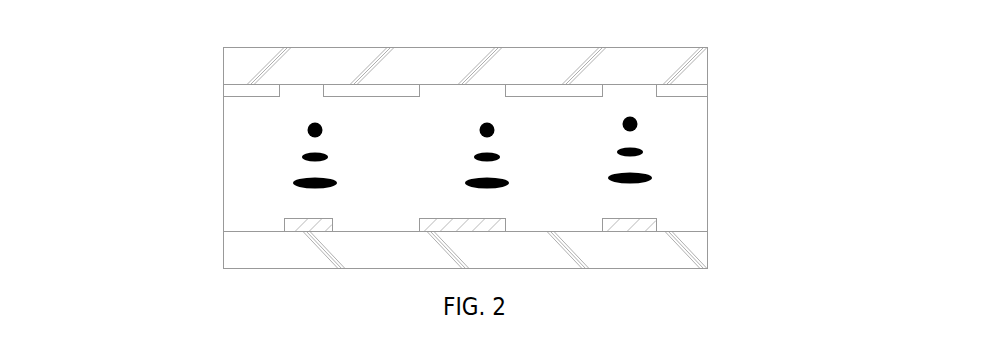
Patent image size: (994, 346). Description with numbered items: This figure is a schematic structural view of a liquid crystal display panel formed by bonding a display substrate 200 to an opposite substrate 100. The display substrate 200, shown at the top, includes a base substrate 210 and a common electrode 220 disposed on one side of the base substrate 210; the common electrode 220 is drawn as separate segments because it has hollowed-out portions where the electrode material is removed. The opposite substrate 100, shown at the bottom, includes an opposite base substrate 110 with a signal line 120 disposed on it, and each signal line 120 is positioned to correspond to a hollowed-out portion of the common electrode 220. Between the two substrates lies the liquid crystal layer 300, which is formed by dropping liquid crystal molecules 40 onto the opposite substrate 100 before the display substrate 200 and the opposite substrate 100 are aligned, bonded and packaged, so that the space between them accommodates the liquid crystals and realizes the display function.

The opposite substrate 100 is at (571, 228).
The opposite base substrate 110 is at (708, 262).
The signal line 120 is at (641, 232).
The display substrate 200 is at (369, 67).
The base substrate 210 is at (224, 52).
The common electrode 220 is at (224, 90).
The liquid crystal layer 300 is at (708, 142).
The liquid crystal molecules 40 is at (335, 180).